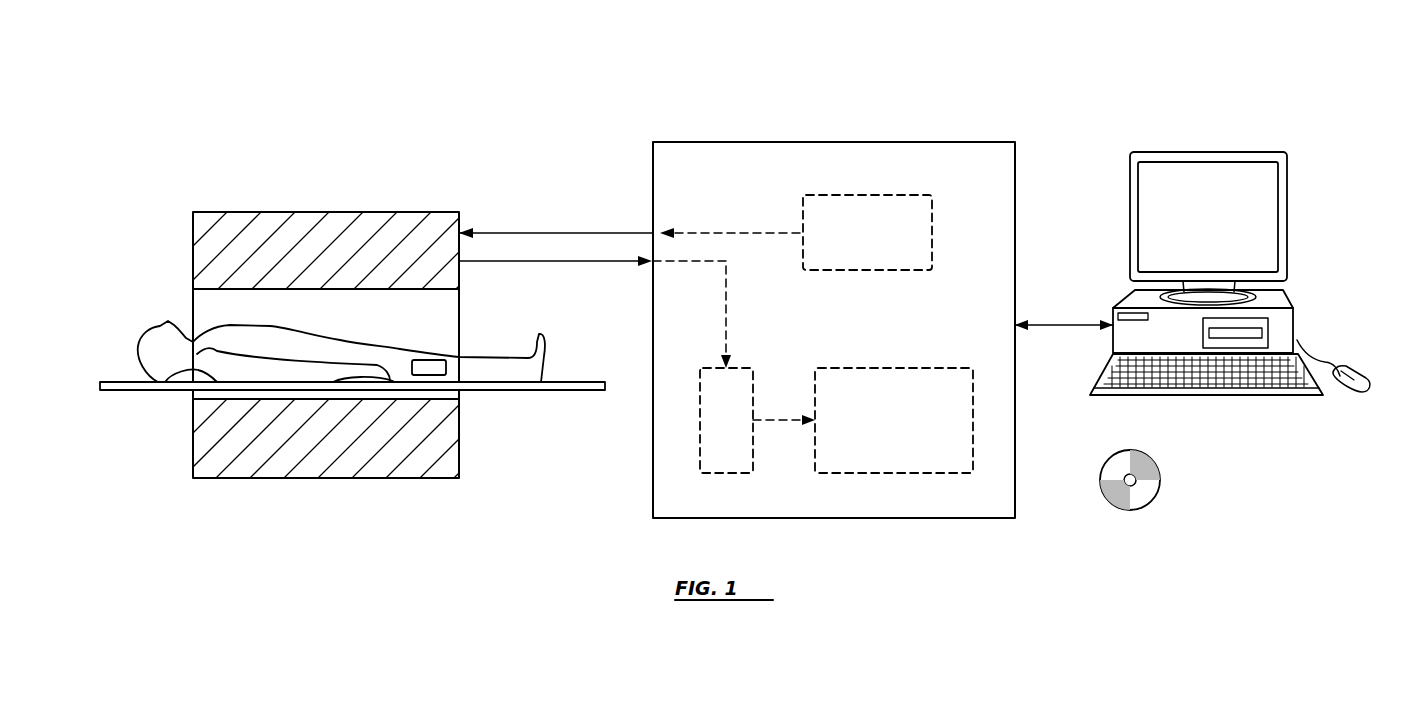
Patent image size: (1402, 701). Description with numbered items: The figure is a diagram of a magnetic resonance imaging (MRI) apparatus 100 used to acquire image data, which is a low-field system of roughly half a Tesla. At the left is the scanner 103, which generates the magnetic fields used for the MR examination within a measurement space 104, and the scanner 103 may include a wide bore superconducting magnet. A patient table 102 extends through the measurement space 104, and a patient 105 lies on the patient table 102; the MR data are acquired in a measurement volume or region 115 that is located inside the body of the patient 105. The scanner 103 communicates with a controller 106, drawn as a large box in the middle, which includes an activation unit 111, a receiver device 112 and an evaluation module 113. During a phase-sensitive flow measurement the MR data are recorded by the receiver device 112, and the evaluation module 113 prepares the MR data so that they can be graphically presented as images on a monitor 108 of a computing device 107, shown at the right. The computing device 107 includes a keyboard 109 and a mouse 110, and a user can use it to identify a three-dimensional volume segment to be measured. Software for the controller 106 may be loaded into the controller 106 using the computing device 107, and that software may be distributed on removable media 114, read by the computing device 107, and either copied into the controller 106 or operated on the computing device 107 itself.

The magnetic resonance imaging (MRI) apparatus 100 is at (560, 133).
The patient table 102 is at (574, 391).
The scanner 103 is at (340, 190).
The measurement space 104 is at (193, 305).
The patient 105 is at (142, 352).
The controller 106 is at (835, 142).
The computing device 107 is at (1206, 150).
The monitor 108 is at (1150, 161).
The keyboard 109 is at (1115, 397).
The mouse 110 is at (1355, 372).
The activation unit 111 is at (905, 271).
The receiver device 112 is at (740, 368).
The evaluation module 113 is at (862, 368).
The removable media 114 is at (1162, 478).
The measurement volume or region 115 is at (457, 362).